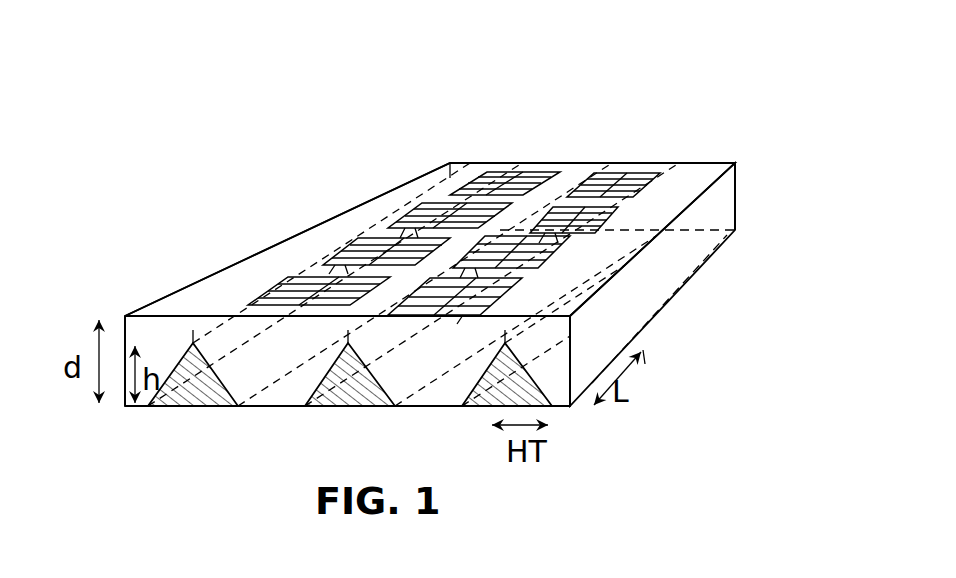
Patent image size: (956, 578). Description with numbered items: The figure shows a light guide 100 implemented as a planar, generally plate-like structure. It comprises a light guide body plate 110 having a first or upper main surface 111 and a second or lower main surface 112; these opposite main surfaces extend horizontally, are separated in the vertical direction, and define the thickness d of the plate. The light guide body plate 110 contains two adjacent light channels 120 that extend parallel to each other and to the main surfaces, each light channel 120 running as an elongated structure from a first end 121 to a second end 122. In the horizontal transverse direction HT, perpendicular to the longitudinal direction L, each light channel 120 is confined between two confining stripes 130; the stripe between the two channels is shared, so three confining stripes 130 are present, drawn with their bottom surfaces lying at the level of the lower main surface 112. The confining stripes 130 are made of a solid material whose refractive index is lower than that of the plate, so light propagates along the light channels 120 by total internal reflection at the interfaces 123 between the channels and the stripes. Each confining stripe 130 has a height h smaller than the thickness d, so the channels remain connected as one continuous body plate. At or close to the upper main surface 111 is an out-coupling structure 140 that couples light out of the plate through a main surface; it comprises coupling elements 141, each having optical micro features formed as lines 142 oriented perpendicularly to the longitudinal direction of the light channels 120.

The light guide 100 is at (188, 188).
The light guide body plate 110 is at (722, 193).
The first or upper main surface 111 is at (698, 170).
The second or lower main surface 112 is at (440, 409).
The light channel 120 is at (278, 365).
The first end 121 is at (288, 397).
The second end 122 is at (582, 159).
The interface 123 is at (222, 372).
The confining stripe 130 is at (192, 398).
The out-coupling structure 140 is at (454, 189).
The coupling element 141 is at (484, 178).
The lines 142 is at (512, 178).